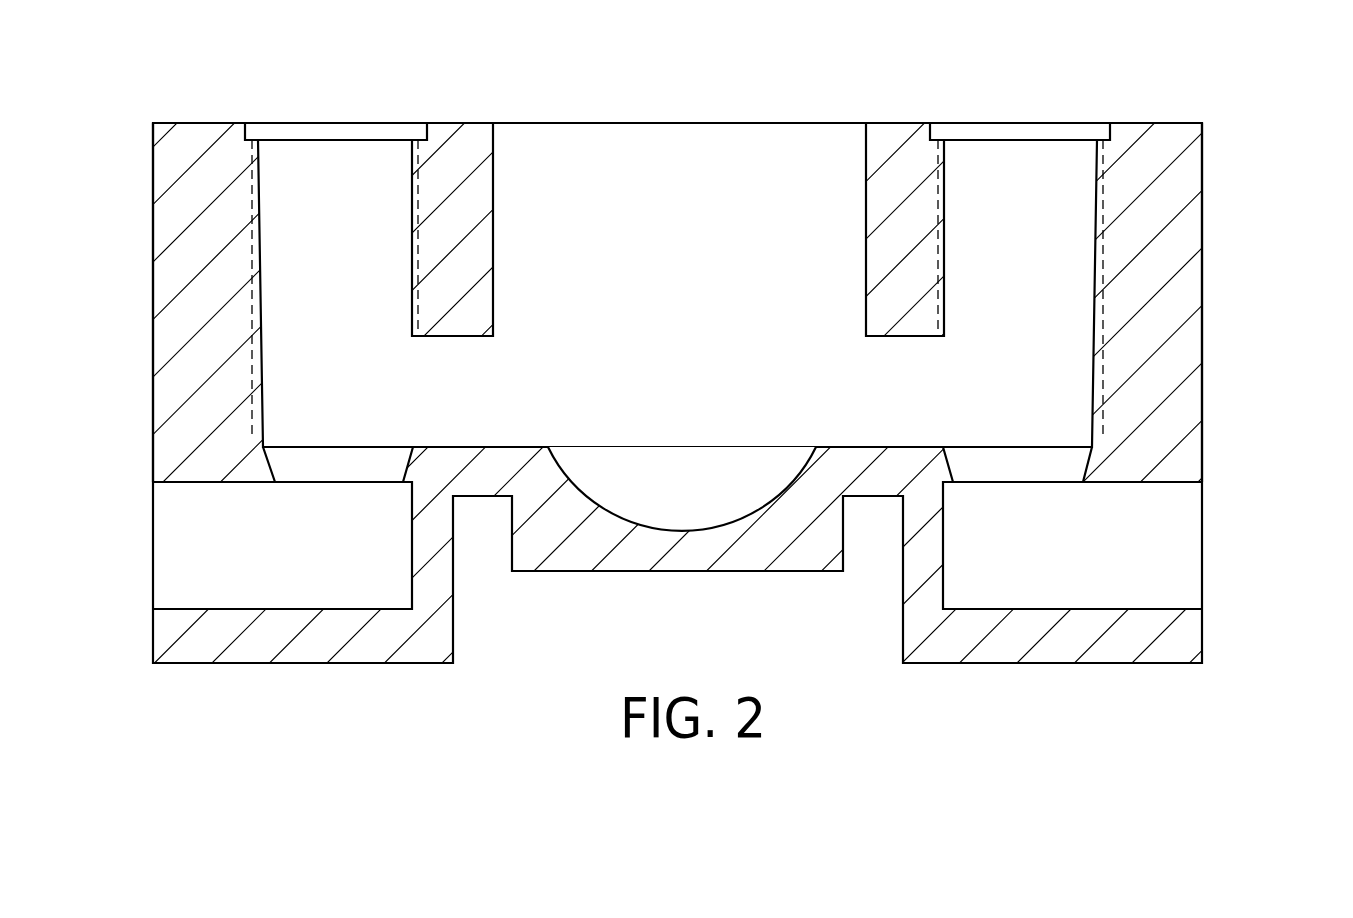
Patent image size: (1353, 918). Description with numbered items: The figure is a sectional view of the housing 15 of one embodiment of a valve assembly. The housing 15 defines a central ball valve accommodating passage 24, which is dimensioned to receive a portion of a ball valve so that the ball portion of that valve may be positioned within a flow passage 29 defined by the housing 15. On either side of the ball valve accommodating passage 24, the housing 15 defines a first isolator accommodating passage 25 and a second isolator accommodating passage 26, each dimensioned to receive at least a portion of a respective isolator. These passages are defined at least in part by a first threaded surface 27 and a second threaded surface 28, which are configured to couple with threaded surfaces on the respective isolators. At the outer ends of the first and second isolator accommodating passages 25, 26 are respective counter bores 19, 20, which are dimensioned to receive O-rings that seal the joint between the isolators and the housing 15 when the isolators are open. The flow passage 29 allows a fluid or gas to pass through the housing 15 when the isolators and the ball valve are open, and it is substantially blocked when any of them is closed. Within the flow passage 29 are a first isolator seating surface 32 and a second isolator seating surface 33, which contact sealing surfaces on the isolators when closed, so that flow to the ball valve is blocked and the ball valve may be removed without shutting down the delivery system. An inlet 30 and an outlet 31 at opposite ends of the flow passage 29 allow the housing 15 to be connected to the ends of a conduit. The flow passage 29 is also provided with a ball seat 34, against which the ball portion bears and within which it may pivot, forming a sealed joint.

The housing 15 is at (1275, 322).
The counter bore 19 is at (413, 142).
The counter bore 20 is at (938, 138).
The ball valve accommodating passage 24 is at (687, 146).
The first isolator accommodating passage 25 is at (266, 224).
The second isolator accommodating passage 26 is at (1094, 210).
The first threaded surface 27 is at (262, 178).
The second threaded surface 28 is at (1098, 180).
The flow passage 29 is at (718, 441).
The inlet 30 is at (192, 484).
The outlet 31 is at (1160, 485).
The first isolator seating surface 32 is at (274, 478).
The second isolator seating surface 33 is at (1082, 470).
The ball seat 34 is at (680, 530).